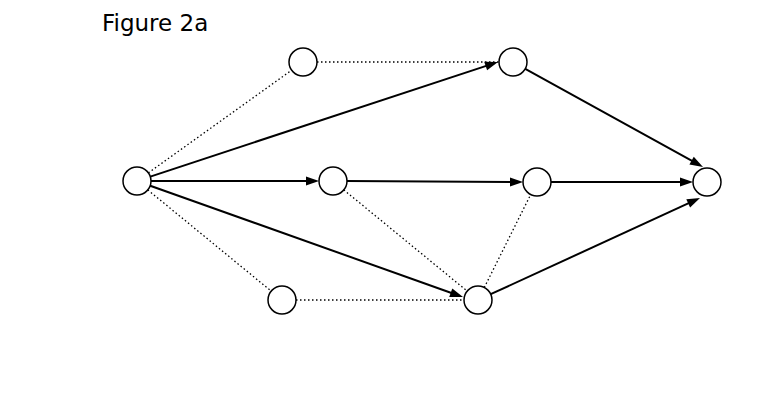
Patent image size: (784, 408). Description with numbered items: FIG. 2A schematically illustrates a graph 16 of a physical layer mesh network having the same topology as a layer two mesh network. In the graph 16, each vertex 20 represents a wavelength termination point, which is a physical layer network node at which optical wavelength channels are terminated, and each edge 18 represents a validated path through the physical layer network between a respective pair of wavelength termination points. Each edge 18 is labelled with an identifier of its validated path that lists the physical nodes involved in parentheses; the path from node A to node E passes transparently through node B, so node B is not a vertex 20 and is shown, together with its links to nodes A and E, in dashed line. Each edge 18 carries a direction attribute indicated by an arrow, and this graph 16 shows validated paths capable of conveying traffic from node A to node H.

The graph 16 is at (723, 53).
The edge 18 is at (426, 186).
The vertex 20 is at (422, 187).